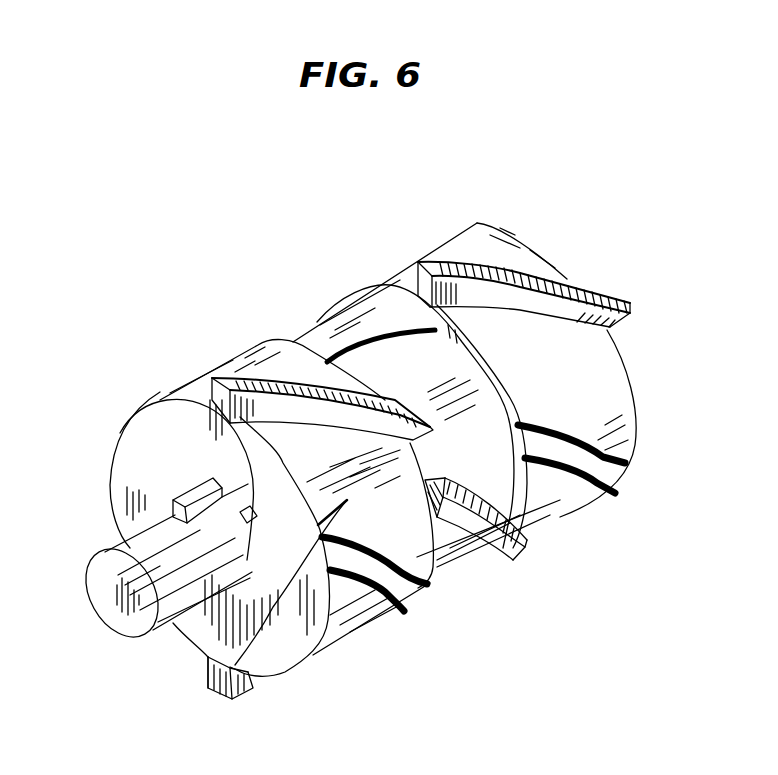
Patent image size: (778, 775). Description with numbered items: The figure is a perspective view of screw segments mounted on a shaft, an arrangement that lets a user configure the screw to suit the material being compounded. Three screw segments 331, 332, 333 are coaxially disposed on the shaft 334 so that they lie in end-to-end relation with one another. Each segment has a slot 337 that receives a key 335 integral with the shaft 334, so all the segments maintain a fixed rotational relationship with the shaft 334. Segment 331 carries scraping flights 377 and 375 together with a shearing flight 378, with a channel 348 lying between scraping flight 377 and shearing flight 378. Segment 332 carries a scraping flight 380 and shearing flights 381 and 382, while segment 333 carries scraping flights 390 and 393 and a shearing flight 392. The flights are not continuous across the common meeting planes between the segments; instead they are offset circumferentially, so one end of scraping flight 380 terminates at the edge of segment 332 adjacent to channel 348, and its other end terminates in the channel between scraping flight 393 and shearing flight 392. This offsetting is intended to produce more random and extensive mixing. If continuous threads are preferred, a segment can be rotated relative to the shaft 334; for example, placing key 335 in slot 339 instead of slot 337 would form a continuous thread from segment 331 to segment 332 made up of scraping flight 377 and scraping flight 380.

The screw segment 331 is at (108, 282).
The screw segment 332 is at (234, 220).
The screw segment 333 is at (406, 175).
The shaft 334 is at (110, 612).
The key 335 is at (190, 492).
The slot 337 is at (218, 480).
The slot 339 is at (160, 400).
The channel 348 is at (208, 686).
The scraping flight 375 is at (243, 685).
The scraping flight 377 is at (258, 403).
The shearing flight 378 is at (393, 597).
The scraping flight 380 is at (520, 550).
The shearing flight 381 is at (420, 445).
The shearing flight 382 is at (372, 335).
The scraping flight 390 is at (625, 299).
The shearing flight 392 is at (630, 459).
The scraping flight 393 is at (433, 570).